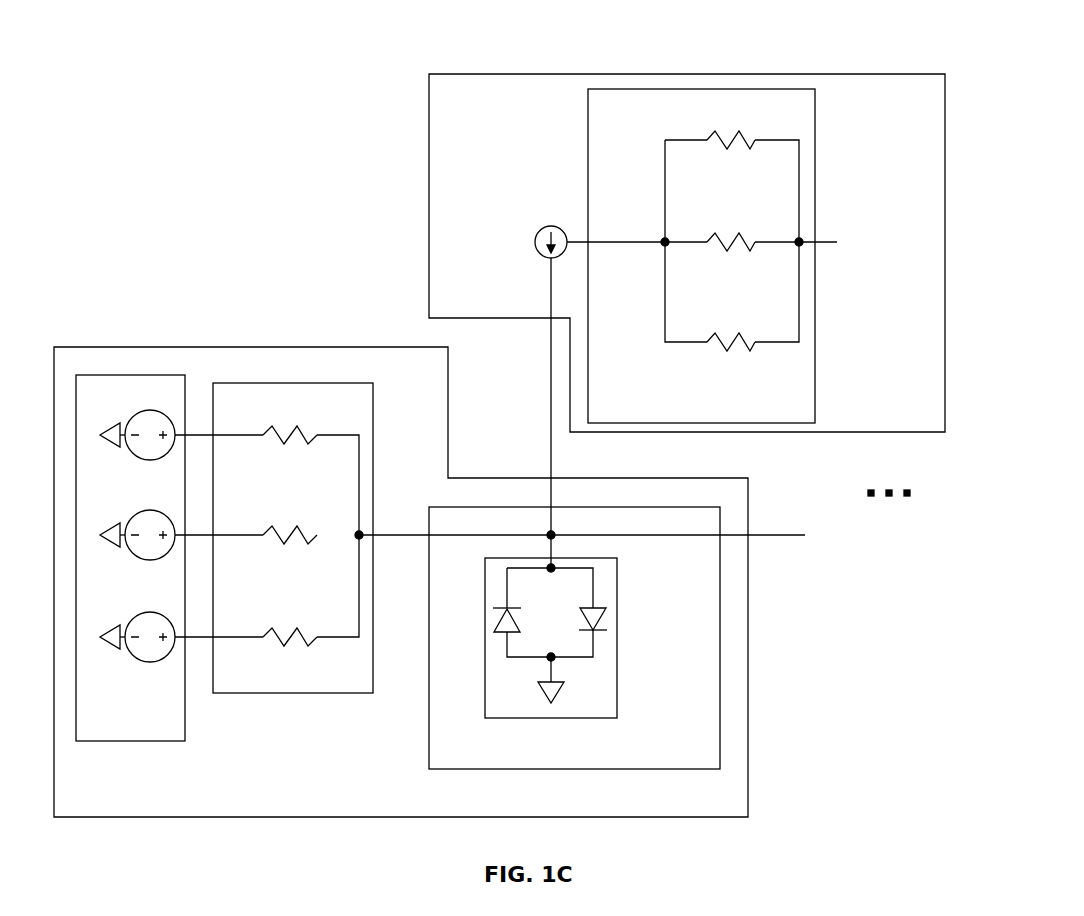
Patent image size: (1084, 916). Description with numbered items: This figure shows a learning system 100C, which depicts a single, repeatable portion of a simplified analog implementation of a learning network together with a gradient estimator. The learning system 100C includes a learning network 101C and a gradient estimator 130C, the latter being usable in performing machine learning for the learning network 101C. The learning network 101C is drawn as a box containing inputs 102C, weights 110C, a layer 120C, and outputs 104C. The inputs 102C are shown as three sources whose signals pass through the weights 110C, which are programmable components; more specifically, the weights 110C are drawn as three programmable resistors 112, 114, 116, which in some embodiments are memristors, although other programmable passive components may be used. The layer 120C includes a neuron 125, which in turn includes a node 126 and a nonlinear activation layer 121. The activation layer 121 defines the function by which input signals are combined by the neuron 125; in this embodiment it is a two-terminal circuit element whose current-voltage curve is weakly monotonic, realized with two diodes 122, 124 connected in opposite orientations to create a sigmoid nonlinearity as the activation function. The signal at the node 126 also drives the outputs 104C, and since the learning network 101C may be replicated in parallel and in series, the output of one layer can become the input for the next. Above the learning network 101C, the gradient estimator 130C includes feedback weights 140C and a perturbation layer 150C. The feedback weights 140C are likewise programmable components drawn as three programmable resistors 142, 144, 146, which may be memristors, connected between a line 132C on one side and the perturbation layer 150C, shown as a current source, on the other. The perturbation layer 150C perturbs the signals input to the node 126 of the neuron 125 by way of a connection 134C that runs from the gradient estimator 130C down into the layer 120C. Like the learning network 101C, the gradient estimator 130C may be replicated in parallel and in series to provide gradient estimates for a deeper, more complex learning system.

The learning system 100C is at (499, 411).
The learning network 101C is at (482, 582).
The inputs 102C is at (130, 558).
The outputs 104C is at (767, 537).
The weights 110C is at (304, 543).
The programmable resistor 112 is at (314, 405).
The programmable resistor 114 is at (318, 510).
The programmable resistor 116 is at (319, 672).
The layer 120C is at (574, 605).
The nonlinear activation layer 121 is at (617, 698).
The diode 122 is at (472, 618).
The diode 124 is at (630, 639).
The neuron 125 is at (590, 510).
The node 126 is at (560, 536).
The gradient estimator 130C is at (687, 304).
The feedback weight output line 132C is at (837, 242).
The gradient estimator connection line 134C is at (551, 432).
The feedback weights 140C is at (745, 252).
The programmable resistor 142 is at (760, 122).
The programmable resistor 144 is at (764, 210).
The programmable resistor 146 is at (765, 330).
The perturbation layer 150C is at (535, 245).